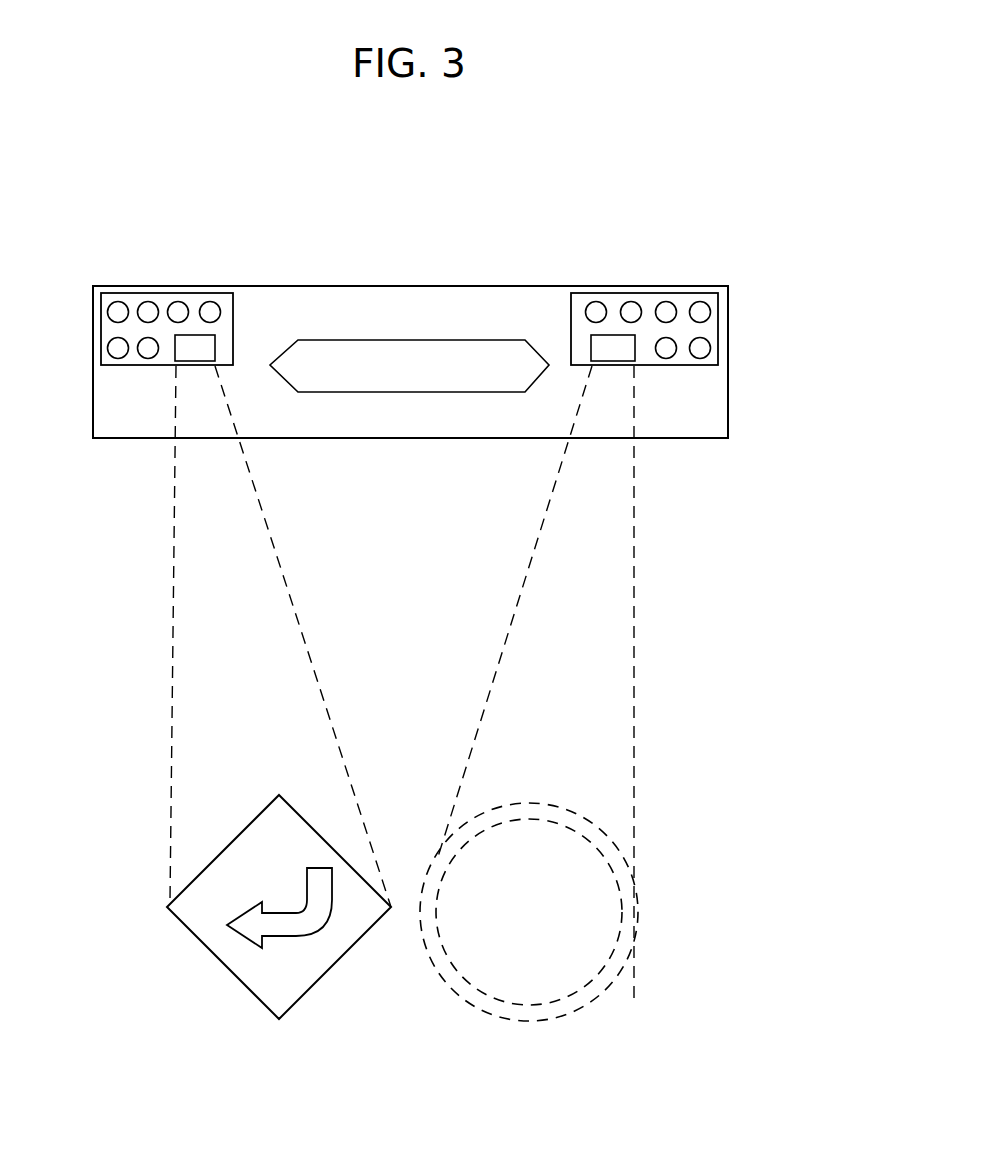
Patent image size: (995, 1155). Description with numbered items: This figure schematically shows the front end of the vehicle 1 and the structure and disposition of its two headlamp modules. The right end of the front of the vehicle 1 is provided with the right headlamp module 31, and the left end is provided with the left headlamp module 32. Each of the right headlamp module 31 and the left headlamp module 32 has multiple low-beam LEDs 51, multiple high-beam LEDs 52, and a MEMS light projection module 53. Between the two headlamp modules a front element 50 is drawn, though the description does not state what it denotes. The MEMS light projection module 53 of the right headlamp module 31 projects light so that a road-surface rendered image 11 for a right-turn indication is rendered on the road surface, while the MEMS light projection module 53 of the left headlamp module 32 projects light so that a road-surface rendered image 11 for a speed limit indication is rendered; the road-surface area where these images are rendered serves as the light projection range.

The vehicle 1 is at (457, 242).
The road-surface rendered image 11 is at (247, 987).
The right headlamp module 31 is at (178, 288).
The left headlamp module 32 is at (632, 288).
The indicator display 50 is at (393, 286).
The low-beam light-emitting diodes 51 is at (123, 358).
The high-beam LEDs 52 is at (122, 301).
The MEMS light projection module 53 is at (215, 340).